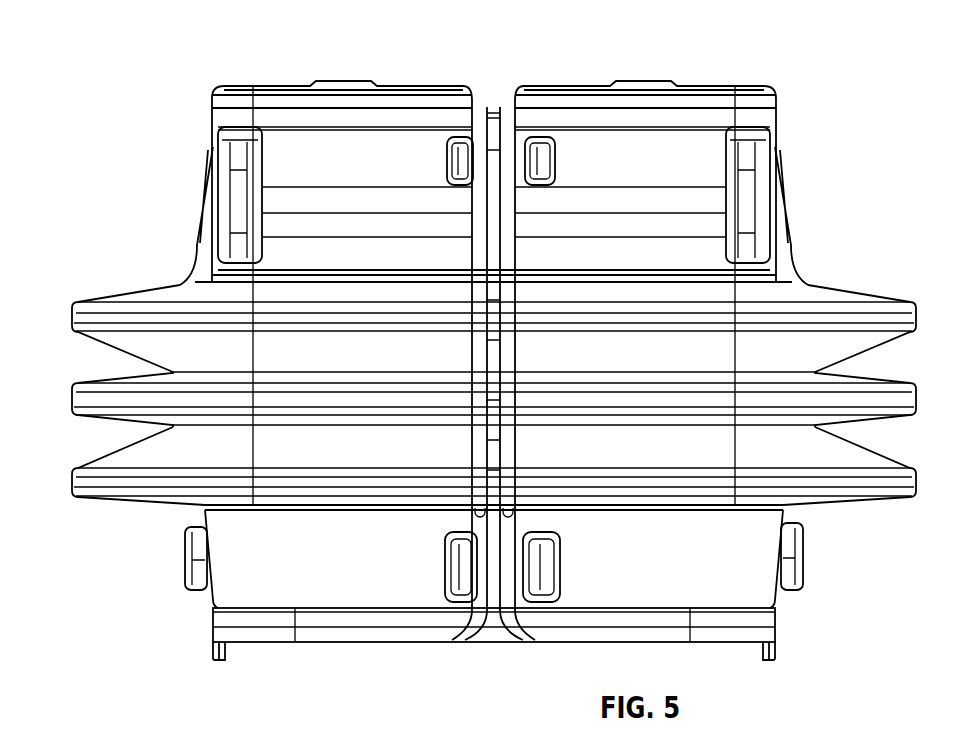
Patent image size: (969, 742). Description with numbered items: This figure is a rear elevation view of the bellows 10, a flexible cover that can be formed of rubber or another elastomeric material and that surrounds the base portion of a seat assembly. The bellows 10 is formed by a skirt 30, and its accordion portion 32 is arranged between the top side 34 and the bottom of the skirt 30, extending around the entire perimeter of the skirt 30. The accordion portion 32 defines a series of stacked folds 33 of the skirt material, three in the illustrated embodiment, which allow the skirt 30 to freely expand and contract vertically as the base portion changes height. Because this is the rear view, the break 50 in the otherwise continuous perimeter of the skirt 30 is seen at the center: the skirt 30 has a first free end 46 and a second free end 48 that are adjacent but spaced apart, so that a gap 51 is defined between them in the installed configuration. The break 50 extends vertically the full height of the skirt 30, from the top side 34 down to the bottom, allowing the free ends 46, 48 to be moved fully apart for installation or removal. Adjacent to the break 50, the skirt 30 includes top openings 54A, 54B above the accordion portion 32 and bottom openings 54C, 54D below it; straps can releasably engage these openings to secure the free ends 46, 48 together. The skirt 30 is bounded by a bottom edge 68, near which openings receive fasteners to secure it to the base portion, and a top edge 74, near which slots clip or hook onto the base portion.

The bellows 10 is at (208, 57).
The skirt 30 is at (777, 148).
The accordion portion 32 is at (70, 300).
The folds 33 is at (90, 490).
The top side 34 is at (729, 78).
The first free end 46 is at (457, 492).
The second free end 48 is at (514, 500).
The break 50 is at (513, 500).
The gap 51 is at (486, 96).
The top opening 54A is at (463, 141).
The top opening 54B is at (545, 146).
The bottom opening 54C is at (473, 600).
The bottom opening 54D is at (528, 600).
The bottom edge 68 is at (213, 632).
The top edge 74 is at (772, 92).